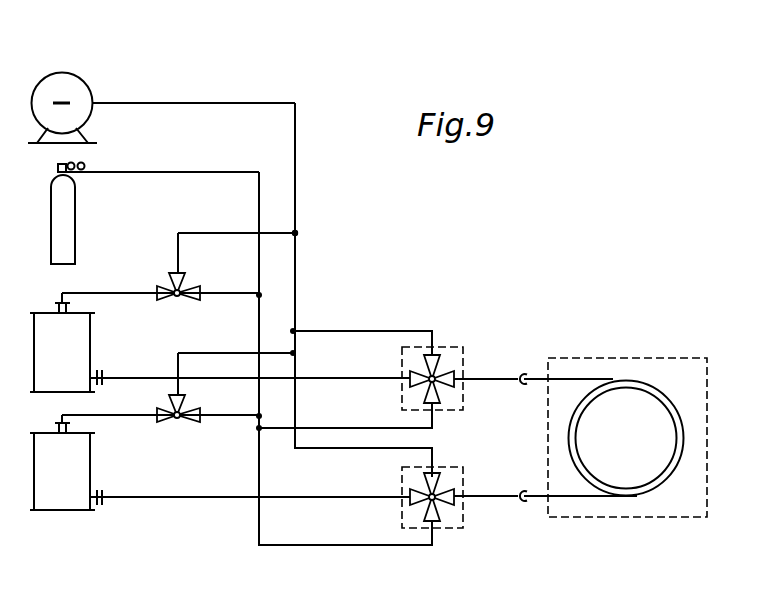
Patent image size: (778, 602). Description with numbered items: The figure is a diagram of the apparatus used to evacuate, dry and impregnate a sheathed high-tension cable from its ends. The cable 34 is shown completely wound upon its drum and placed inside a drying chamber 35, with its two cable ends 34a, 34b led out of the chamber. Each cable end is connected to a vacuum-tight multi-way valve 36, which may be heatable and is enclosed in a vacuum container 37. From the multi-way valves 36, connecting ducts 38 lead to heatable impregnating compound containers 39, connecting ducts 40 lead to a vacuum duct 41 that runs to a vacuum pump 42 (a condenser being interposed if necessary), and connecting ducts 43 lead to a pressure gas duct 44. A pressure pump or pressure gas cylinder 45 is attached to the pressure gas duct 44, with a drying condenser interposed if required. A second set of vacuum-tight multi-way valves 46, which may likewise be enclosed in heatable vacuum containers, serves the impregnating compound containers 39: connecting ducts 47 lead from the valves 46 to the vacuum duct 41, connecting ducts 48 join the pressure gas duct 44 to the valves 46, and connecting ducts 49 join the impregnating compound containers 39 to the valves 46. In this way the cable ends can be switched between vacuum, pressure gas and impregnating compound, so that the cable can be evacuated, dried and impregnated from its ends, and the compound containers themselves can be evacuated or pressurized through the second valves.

The cable 34 is at (613, 385).
The cable end 34a is at (537, 493).
The cable end 34b is at (539, 377).
The drying chamber 35 is at (688, 370).
The vacuum-tight multi-way valve 36 is at (420, 370).
The vacuum container 37 is at (455, 358).
The connecting duct 38 is at (380, 377).
The impregnating compound container 39 is at (77, 345).
The connecting duct 40 is at (213, 233).
The vacuum duct 41 is at (154, 100).
The vacuum pump 42 is at (63, 88).
The connecting duct 43 is at (323, 428).
The pressure gas duct 44 is at (260, 183).
The pressure gas cylinder 45 is at (68, 222).
The vacuum-tight multi-way valve 46 is at (182, 288).
The connecting duct 47 is at (314, 234).
The connecting duct 48 is at (179, 257).
The connecting duct 49 is at (133, 377).